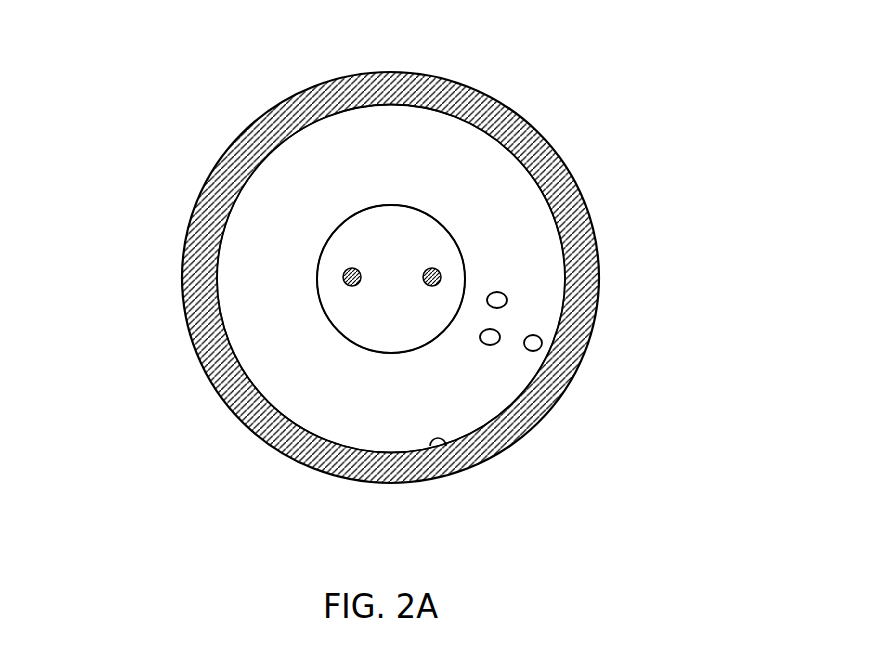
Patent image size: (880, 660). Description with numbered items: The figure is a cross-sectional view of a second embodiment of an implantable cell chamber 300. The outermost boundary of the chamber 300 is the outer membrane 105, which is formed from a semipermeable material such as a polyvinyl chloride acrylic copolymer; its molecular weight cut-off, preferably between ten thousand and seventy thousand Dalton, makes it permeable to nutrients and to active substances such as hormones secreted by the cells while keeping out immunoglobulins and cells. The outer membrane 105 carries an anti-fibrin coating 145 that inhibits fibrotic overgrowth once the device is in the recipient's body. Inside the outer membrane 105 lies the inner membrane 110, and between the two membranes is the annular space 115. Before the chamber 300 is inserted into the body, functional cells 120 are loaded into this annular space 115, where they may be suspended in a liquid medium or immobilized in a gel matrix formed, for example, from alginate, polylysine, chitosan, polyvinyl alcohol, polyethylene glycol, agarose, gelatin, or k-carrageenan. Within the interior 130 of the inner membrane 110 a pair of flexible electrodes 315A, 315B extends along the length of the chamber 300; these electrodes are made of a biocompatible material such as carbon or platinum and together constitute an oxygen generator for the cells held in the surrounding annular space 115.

The chamber 300 is at (384, 279).
The anti-fibrin coating 145 is at (556, 153).
The annular space 115 is at (277, 198).
The inner membrane 110 is at (445, 332).
The interior 130 is at (380, 335).
The flexible electrode 315A is at (343, 277).
The flexible electrode 315B is at (441, 277).
The functional cells 120 is at (507, 298).
The outer membrane 105 is at (447, 447).